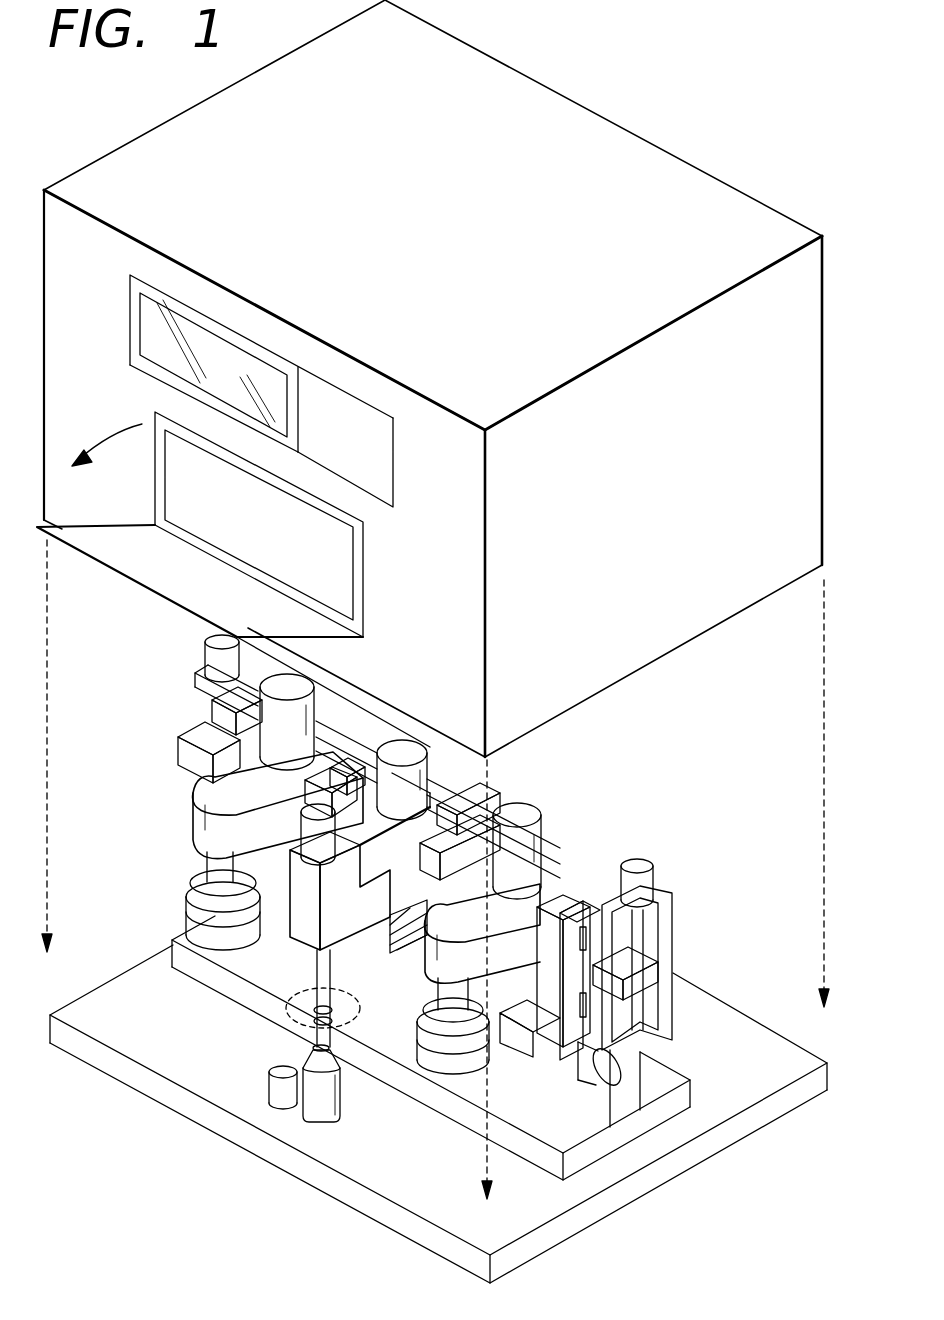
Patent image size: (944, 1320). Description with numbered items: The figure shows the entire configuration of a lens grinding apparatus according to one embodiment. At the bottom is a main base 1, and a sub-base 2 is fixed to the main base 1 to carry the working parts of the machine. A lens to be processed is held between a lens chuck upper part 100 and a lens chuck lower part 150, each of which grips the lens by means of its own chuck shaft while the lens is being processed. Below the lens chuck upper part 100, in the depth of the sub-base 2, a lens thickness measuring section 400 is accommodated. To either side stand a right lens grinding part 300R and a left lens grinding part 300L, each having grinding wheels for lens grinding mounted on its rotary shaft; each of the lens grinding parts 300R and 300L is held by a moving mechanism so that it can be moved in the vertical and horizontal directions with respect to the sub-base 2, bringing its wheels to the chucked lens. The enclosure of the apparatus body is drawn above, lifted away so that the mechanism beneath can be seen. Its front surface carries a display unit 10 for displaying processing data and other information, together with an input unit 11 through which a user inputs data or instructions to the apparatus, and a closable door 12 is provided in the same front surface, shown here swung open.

The main base 1 is at (555, 1200).
The sub-base 2 is at (627, 1127).
The display unit 10 is at (222, 372).
The input unit 11 is at (360, 430).
The closable door 12 is at (190, 587).
The lens chuck upper part 100 is at (276, 966).
The lens chuck lower part 150 is at (339, 1135).
The left lens grinding part 300L is at (210, 820).
The right lens grinding part 300R is at (517, 928).
The lens thickness measuring section 400 is at (413, 900).